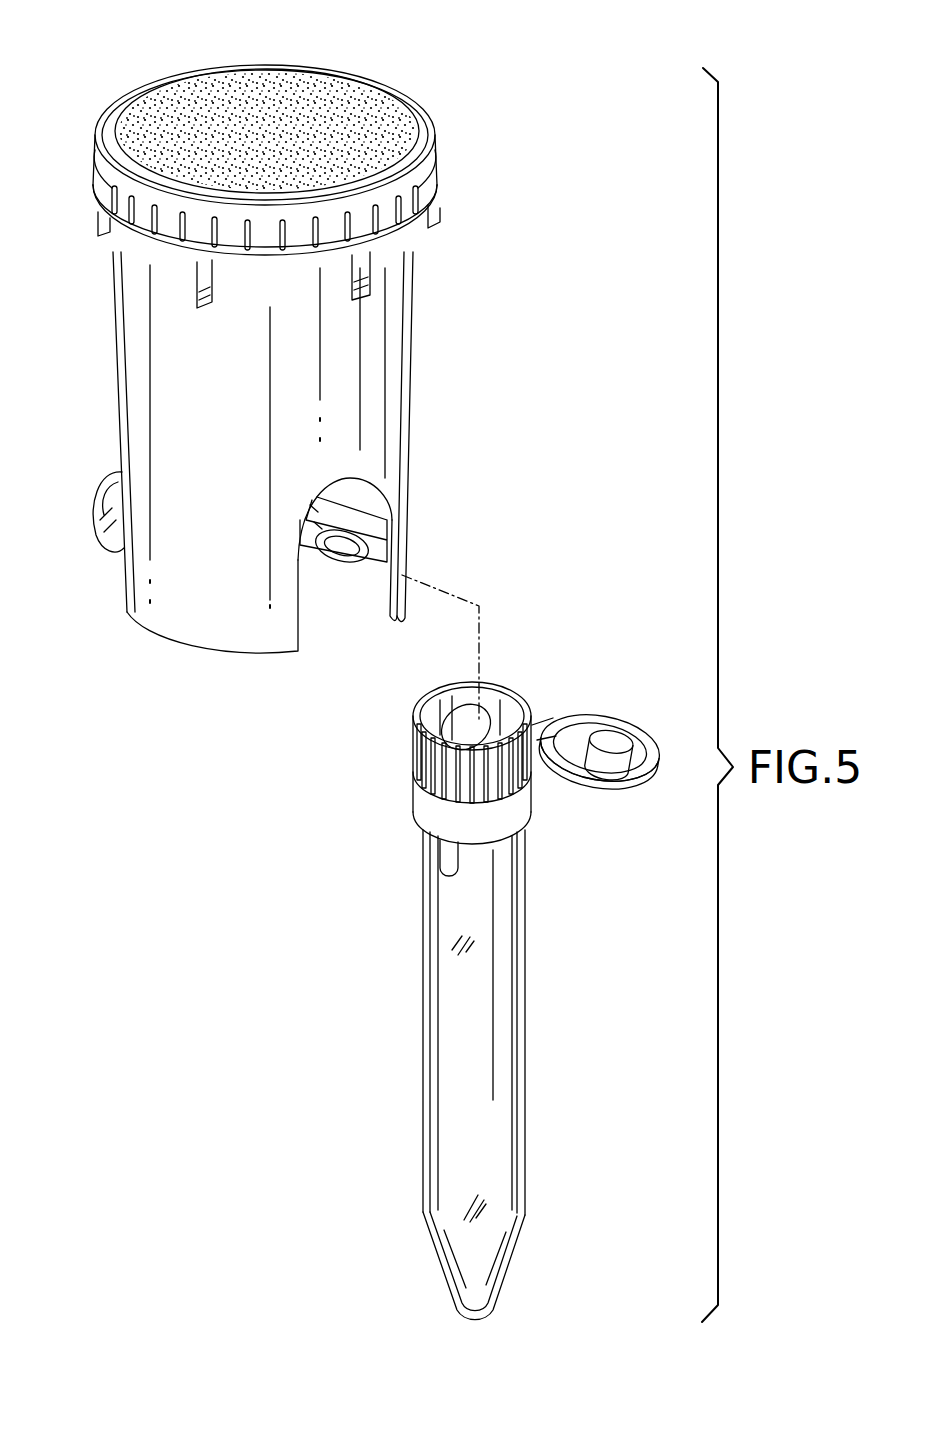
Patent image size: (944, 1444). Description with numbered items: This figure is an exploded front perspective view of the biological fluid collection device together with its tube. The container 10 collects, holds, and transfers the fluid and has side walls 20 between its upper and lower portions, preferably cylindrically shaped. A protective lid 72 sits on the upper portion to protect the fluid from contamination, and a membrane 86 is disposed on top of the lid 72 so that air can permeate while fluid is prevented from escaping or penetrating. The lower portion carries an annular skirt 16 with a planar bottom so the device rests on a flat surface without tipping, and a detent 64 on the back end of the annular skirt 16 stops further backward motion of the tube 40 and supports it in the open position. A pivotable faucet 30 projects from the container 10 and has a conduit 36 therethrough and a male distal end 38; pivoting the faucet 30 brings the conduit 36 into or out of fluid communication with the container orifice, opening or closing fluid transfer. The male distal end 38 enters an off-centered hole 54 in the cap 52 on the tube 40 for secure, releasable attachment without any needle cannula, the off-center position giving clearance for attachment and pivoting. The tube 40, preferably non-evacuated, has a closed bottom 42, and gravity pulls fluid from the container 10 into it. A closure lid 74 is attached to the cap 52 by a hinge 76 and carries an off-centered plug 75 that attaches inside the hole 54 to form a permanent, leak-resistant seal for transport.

The container 10 is at (98, 400).
The annular skirt 16 is at (404, 598).
The side walls 20 is at (400, 354).
The pivotable faucet 30 is at (354, 585).
The conduit 36 is at (338, 565).
The male distal end 38 is at (318, 518).
The tube 40 is at (555, 988).
The closed bottom 42 is at (476, 1325).
The cap 52 is at (413, 800).
The hole 54 is at (487, 716).
The detent 64 is at (106, 530).
The protective lid 72 is at (438, 172).
The closure lid 74 is at (592, 784).
The plug 75 is at (607, 718).
The hinge 76 is at (542, 733).
The membrane 86 is at (213, 100).